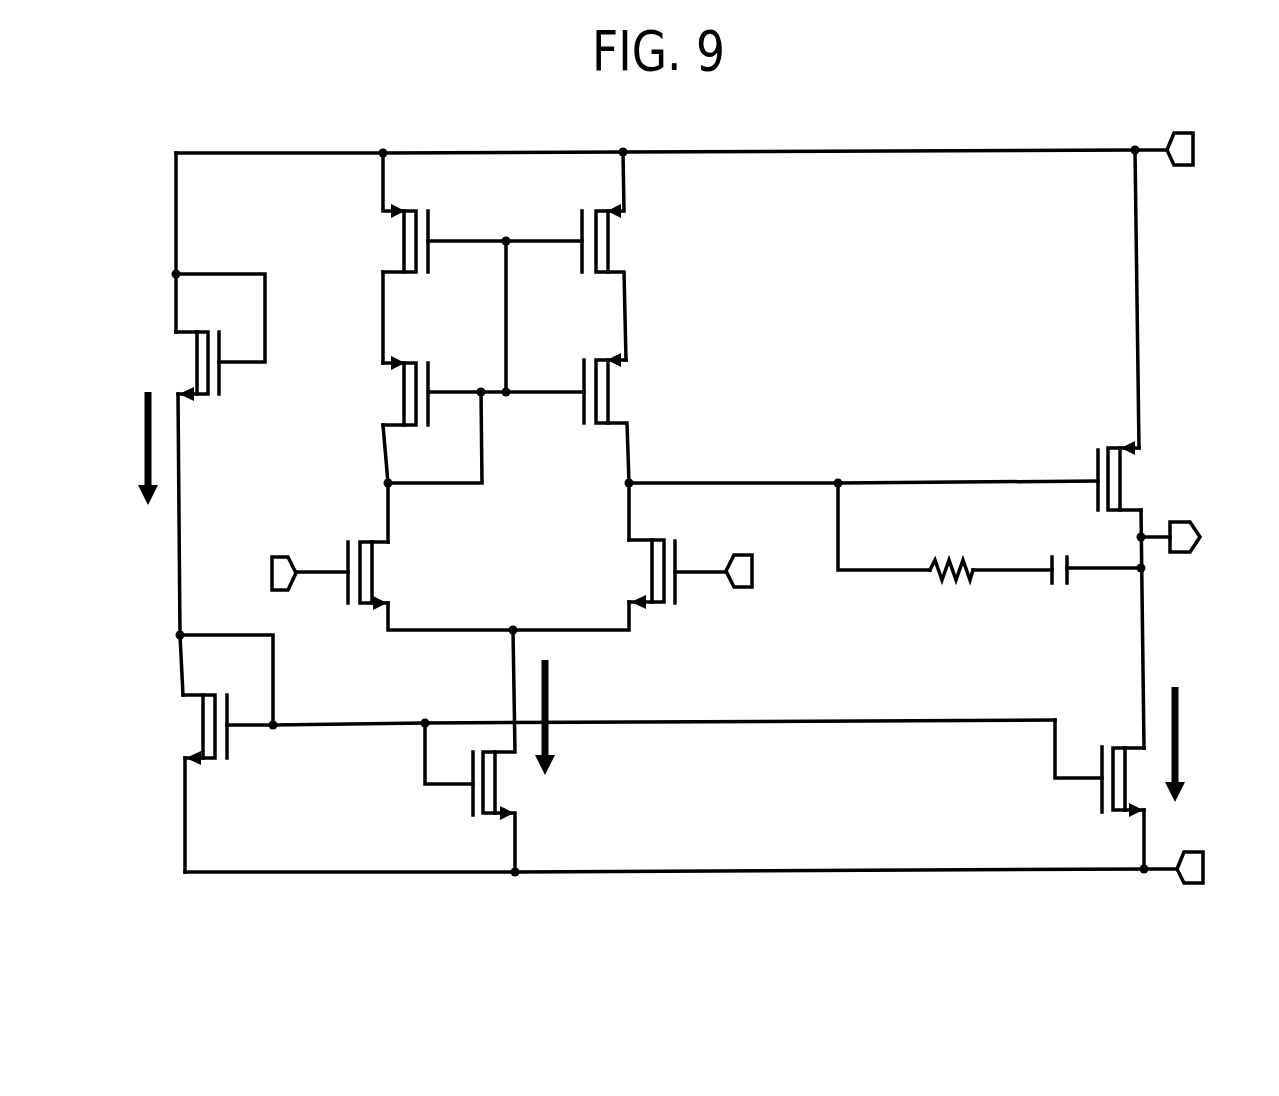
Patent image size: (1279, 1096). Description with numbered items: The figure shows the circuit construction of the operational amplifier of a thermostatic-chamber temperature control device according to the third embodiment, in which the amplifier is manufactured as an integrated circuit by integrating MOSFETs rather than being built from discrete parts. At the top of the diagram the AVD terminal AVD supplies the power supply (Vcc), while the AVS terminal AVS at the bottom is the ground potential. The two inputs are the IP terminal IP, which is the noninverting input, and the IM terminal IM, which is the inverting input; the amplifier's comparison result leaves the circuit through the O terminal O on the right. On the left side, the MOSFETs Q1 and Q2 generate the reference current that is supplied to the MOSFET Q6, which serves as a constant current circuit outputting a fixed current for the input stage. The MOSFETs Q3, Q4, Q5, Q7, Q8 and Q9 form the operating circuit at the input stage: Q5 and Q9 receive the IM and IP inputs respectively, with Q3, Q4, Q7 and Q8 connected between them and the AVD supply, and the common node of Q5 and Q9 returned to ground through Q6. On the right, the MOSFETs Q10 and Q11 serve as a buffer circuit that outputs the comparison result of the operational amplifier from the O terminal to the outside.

The MOSFET Q1 is at (199, 337).
The MOSFET Q2 is at (205, 700).
The MOSFET Q3 is at (467, 258).
The MOSFET Q4 is at (468, 391).
The MOSFET Q5 is at (359, 576).
The MOSFET Q6 is at (470, 751).
The MOSFET Q7 is at (621, 256).
The MOSFET Q8 is at (622, 446).
The MOSFET Q9 is at (662, 574).
The MOSFET Q10 is at (1146, 475).
The MOSFET Q11 is at (1099, 791).
The AVD terminal AVD is at (1207, 149).
The AVS terminal AVS is at (1216, 868).
The IM terminal IM is at (263, 572).
The IP terminal IP is at (759, 572).
The O terminal O is at (1197, 540).